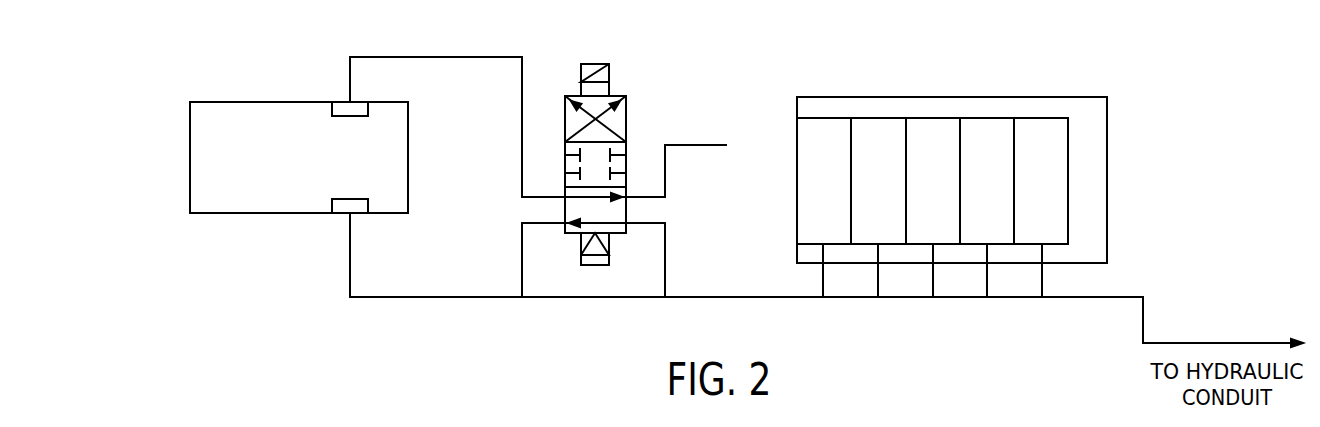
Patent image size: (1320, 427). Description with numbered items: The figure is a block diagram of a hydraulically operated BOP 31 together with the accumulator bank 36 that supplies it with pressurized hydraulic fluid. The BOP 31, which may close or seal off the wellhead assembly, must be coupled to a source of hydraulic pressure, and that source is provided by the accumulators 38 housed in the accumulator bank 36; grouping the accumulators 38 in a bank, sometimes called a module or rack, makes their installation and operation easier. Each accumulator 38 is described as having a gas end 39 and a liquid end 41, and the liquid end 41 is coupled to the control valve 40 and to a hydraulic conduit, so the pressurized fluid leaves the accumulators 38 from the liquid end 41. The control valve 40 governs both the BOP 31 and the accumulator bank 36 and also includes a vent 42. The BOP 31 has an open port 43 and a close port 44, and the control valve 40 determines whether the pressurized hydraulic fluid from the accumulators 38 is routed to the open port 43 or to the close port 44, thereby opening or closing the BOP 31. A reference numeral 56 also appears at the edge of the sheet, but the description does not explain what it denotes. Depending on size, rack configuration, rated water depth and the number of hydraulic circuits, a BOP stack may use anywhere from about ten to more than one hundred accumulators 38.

The BOP 31 is at (408, 158).
The accumulator bank 36 is at (1108, 118).
The accumulator 38 is at (830, 117).
The gas end 39 is at (930, 117).
The control valve 40 is at (562, 223).
The liquid end 41 is at (863, 245).
The vent 42 is at (700, 145).
The open port 43 is at (340, 213).
The close port 44 is at (338, 102).
The component (partial, adjacent figure) 56 is at (985, 426).